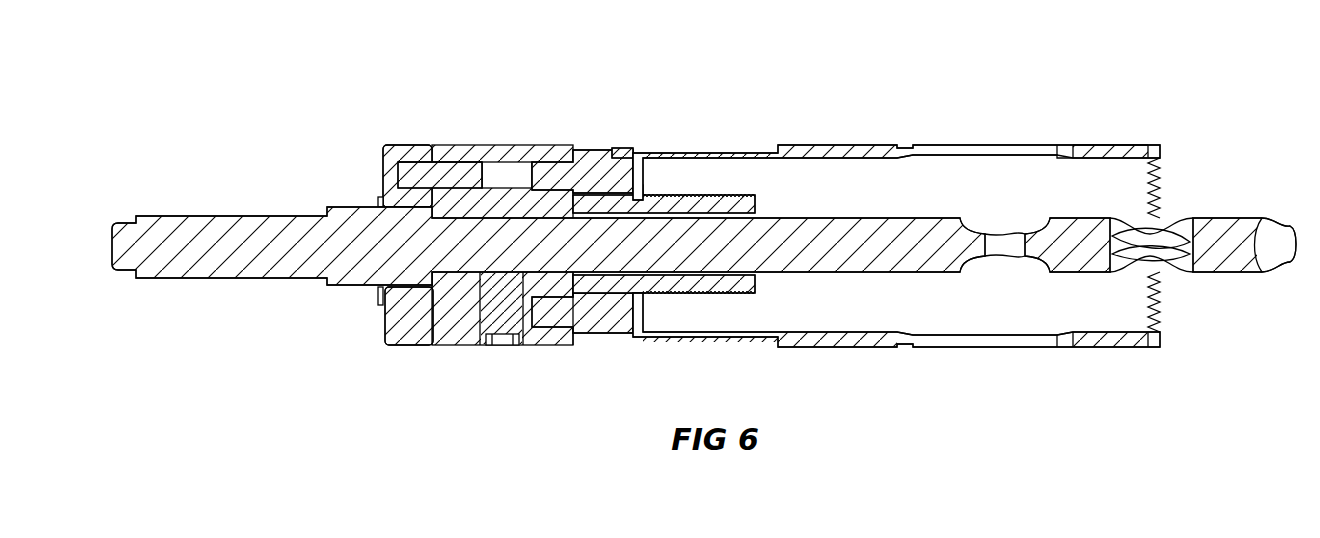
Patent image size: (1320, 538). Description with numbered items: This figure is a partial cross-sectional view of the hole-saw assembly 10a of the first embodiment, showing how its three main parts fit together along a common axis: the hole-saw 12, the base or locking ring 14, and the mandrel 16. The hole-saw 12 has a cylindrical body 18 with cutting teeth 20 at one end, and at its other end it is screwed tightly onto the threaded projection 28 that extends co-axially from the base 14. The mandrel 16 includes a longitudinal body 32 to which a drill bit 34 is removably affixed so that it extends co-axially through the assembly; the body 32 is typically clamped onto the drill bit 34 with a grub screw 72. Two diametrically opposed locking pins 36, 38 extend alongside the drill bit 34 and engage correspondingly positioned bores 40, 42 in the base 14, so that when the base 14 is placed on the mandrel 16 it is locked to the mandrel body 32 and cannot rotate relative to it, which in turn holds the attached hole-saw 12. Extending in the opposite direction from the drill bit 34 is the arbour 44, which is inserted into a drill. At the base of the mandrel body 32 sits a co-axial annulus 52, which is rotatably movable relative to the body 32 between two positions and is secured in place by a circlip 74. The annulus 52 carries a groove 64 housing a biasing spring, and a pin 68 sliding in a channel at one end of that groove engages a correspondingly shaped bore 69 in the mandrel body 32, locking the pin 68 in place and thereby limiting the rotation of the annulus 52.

The hole-saw assembly 10a is at (937, 78).
The hole-saw 12 is at (968, 340).
The base or locking ring 14 is at (597, 155).
The mandrel 16 is at (507, 143).
The cylindrical body 18 is at (1062, 338).
The cutting teeth 20 is at (1160, 180).
The threaded projection 28 is at (708, 192).
The longitudinal body 32 is at (463, 338).
The drill bit 34 is at (1212, 263).
The locking pin 36 is at (622, 310).
The locking pin 38 is at (622, 175).
The bore 40 is at (580, 335).
The bore 42 is at (613, 150).
The arbour 44 is at (242, 235).
The co-axial annulus 52 is at (392, 343).
The groove 64 is at (393, 175).
The pin 68 is at (443, 178).
The bore 69 is at (450, 177).
The grub screw 72 is at (502, 340).
The circlip 74 is at (378, 297).